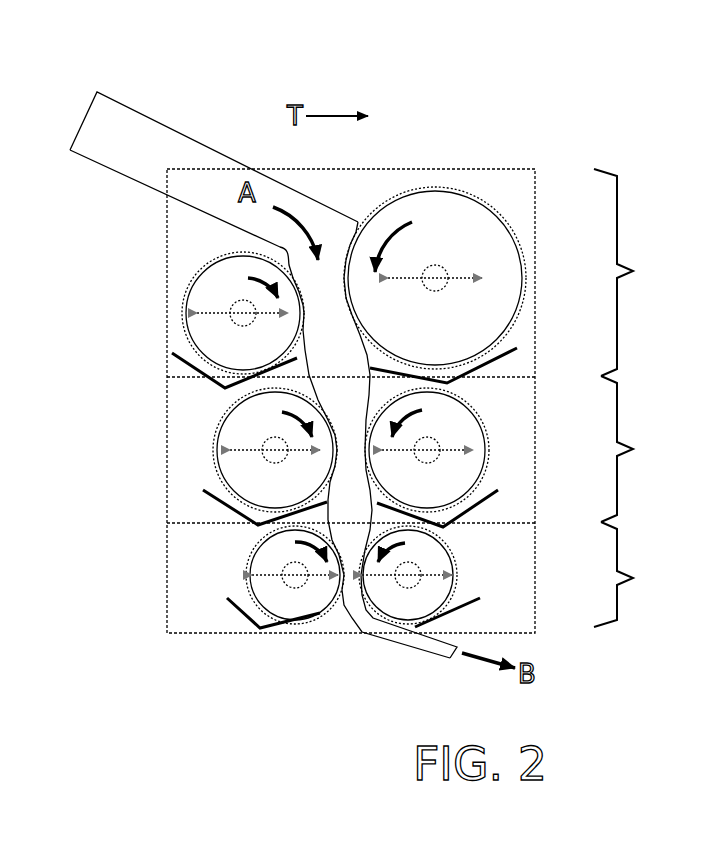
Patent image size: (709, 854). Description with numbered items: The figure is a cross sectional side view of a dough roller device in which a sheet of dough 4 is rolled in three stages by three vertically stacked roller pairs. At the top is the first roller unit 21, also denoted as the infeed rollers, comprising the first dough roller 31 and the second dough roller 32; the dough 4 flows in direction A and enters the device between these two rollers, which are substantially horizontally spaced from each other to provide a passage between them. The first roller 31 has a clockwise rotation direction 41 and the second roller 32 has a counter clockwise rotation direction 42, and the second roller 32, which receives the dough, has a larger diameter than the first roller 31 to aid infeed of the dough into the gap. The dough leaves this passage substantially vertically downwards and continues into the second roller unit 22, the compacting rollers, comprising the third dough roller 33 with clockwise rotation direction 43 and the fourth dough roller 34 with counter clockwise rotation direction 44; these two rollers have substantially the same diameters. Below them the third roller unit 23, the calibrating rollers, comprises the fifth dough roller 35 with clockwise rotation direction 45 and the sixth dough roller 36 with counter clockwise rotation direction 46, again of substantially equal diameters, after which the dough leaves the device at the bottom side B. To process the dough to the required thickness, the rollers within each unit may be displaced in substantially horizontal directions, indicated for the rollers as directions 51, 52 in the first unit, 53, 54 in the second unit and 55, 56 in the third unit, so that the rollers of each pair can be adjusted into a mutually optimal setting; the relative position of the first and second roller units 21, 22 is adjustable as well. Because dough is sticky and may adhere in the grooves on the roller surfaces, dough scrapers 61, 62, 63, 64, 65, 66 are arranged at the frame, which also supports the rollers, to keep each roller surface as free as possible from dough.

The dough 4 is at (157, 138).
The first roller unit 21 is at (639, 272).
The second roller unit 22 is at (637, 449).
The third roller unit 23 is at (635, 574).
The first dough roller 31 is at (195, 298).
The second dough roller 32 is at (462, 210).
The third dough roller 33 is at (228, 430).
The fourth dough roller 34 is at (465, 425).
The fifth dough roller 35 is at (263, 558).
The sixth dough roller 36 is at (445, 560).
The clockwise rotation direction 41 is at (245, 281).
The counter clockwise rotation direction 42 is at (412, 240).
The clockwise rotation direction 43 is at (279, 417).
The counter clockwise rotation direction 44 is at (424, 419).
The clockwise rotation direction 45 is at (294, 553).
The counter clockwise rotation direction 46 is at (409, 551).
The horizontal displacement direction 51 is at (270, 317).
The horizontal displacement direction 52 is at (462, 283).
The horizontal displacement direction 53 is at (303, 453).
The horizontal displacement direction 54 is at (450, 453).
The horizontal displacement direction 55 is at (320, 578).
The horizontal displacement direction 56 is at (432, 578).
The dough scraper 61 is at (170, 370).
The dough scraper 62 is at (512, 350).
The dough scraper 63 is at (217, 500).
The dough scraper 64 is at (483, 503).
The dough scraper 65 is at (240, 617).
The dough scraper 66 is at (472, 605).